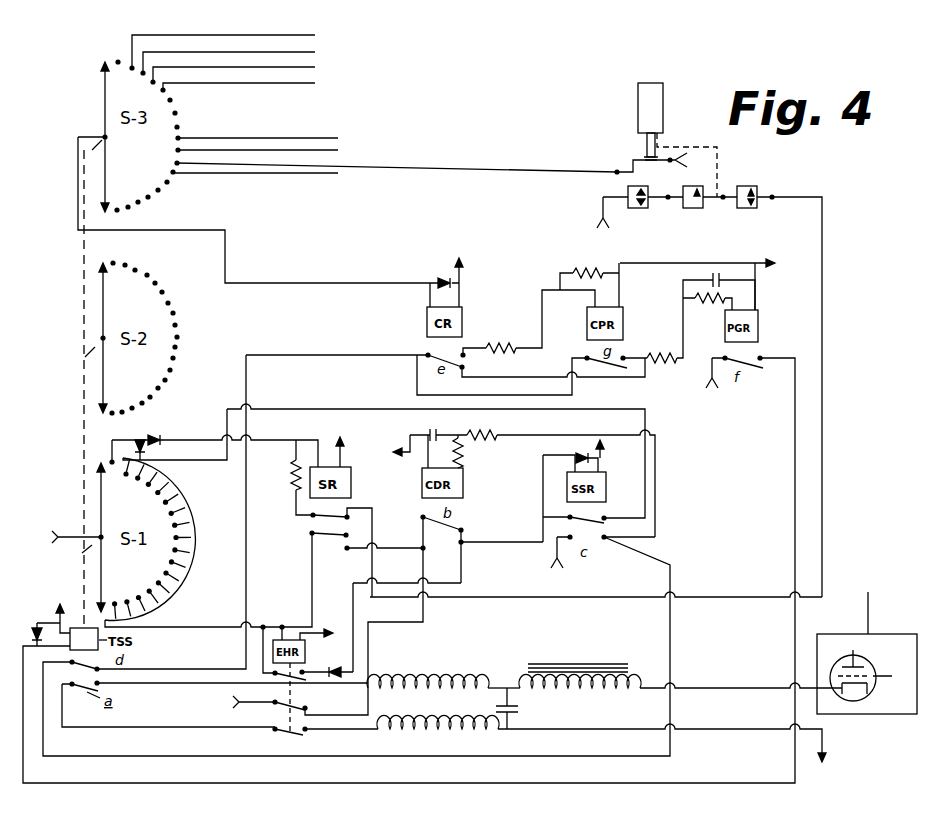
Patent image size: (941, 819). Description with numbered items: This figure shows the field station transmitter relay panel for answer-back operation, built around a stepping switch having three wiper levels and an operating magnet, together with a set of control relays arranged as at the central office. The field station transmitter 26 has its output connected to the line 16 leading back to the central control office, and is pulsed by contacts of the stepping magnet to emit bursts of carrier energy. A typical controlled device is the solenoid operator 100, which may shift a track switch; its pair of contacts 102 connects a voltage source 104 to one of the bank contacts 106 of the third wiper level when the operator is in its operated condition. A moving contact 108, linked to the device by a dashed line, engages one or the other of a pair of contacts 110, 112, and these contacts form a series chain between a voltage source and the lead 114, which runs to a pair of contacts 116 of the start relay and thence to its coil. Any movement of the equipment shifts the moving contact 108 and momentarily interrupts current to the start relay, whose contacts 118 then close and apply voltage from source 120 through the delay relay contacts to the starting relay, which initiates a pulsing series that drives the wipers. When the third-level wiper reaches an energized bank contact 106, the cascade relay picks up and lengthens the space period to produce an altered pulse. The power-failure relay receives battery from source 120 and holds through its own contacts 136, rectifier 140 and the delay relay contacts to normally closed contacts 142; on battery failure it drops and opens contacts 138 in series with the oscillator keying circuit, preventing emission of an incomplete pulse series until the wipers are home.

The line 16 is at (873, 607).
The field station transmitter 26 is at (897, 646).
The solenoid operator 100 is at (638, 117).
The pair of contacts 102 is at (631, 168).
The voltage source 104 is at (680, 152).
The bank contact 106 is at (172, 163).
The moving contact 108 is at (710, 199).
The contact 110 is at (693, 185).
The contact 112 is at (697, 209).
The lead 114 is at (822, 266).
The contacts of relay SR 116 is at (318, 521).
The contacts of relay SR 118 is at (332, 547).
The voltage source 120 is at (68, 524).
The contacts of relay EHR 136 is at (302, 669).
The contacts of relay EHR 138 is at (302, 734).
The rectifier 140 is at (343, 665).
The normally closed contacts 142 is at (306, 702).